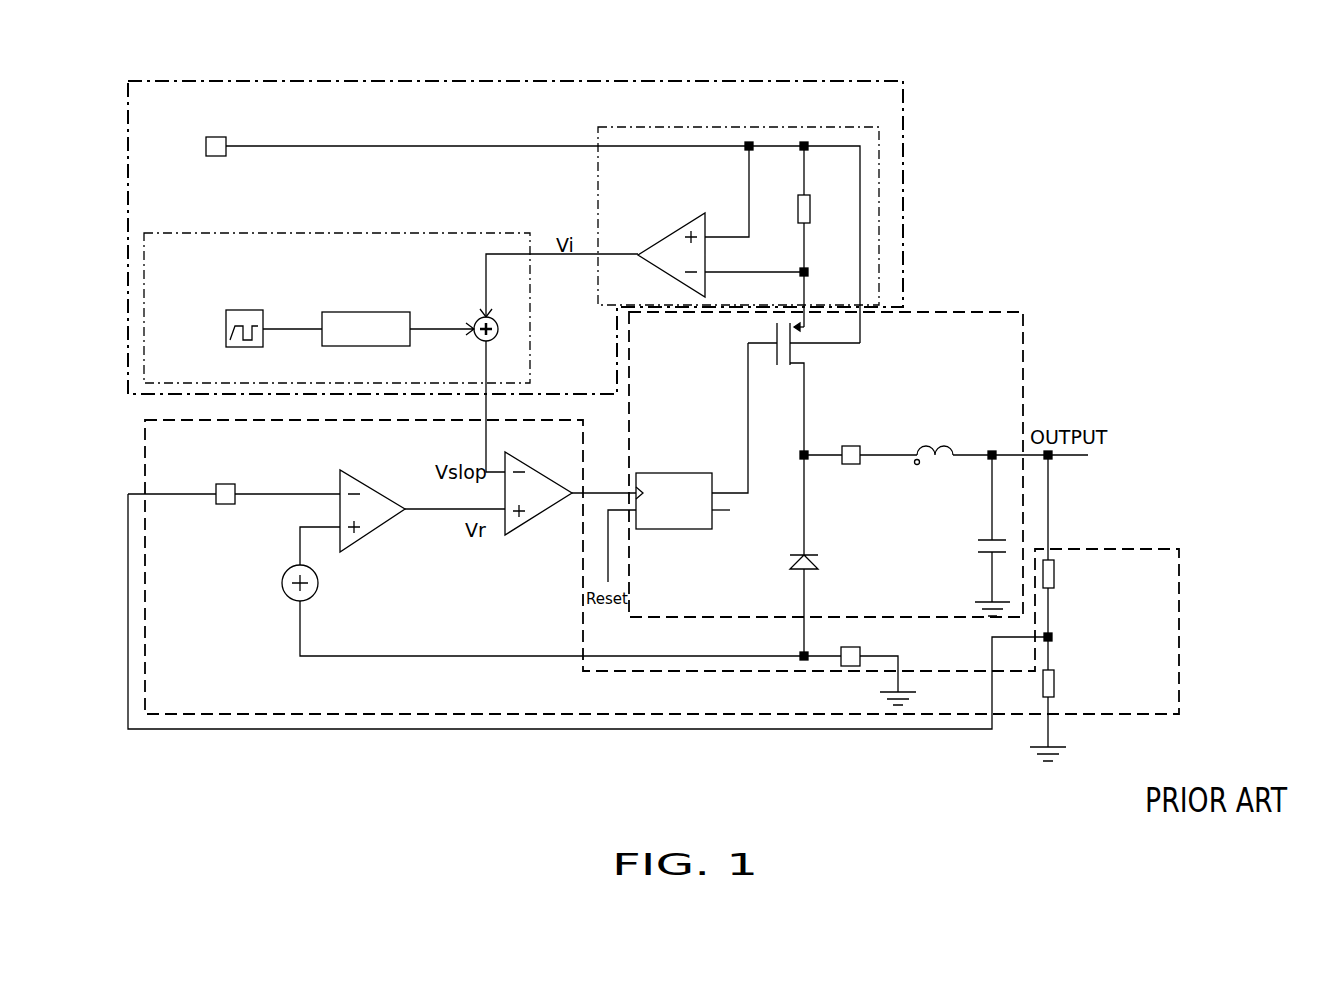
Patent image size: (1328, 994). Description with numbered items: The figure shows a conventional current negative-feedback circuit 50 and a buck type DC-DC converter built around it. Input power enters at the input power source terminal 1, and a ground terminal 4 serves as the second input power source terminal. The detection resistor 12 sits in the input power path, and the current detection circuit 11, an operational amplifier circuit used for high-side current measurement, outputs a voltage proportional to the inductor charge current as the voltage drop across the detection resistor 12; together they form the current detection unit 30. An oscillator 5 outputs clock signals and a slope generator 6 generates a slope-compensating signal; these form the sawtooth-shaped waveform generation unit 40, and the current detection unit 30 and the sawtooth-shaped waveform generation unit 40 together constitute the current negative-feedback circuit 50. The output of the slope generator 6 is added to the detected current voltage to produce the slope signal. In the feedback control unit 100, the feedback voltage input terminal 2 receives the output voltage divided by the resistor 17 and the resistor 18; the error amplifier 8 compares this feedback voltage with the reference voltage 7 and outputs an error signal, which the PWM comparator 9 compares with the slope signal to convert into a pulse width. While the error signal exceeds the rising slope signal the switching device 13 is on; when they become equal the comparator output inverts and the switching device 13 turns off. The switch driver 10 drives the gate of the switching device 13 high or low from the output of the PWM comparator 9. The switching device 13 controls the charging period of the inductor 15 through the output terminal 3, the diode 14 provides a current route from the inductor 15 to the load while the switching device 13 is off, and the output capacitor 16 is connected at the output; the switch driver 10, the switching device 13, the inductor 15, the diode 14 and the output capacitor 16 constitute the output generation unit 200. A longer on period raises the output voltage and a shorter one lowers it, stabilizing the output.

The input power source terminal 1 is at (206, 147).
The feedback voltage input terminal 2 is at (212, 492).
The output terminal 3 is at (853, 465).
The ground terminal 4 is at (865, 648).
The oscillator 5 is at (226, 329).
The slope generator 6 is at (318, 312).
The reference voltage 7 is at (290, 602).
The error amplifier 8 is at (373, 530).
The PWM comparator 9 is at (540, 512).
The SW driver 10 is at (688, 530).
The current detection circuit 11 is at (652, 263).
The detection resistor 12 is at (812, 208).
The switching device 13 is at (808, 331).
The diode 14 is at (792, 560).
The inductor 15 is at (932, 435).
The output capacitor 16 is at (978, 548).
The resistor R3 17 is at (1056, 578).
The resistor R2 18 is at (1056, 683).
The current detection unit 30 is at (738, 127).
The sawtooth-shaped waveform generation unit 40 is at (326, 233).
The current negative-feedback circuit 50 is at (494, 81).
The FB control unit 100 is at (777, 715).
The output generation unit 200 is at (958, 312).